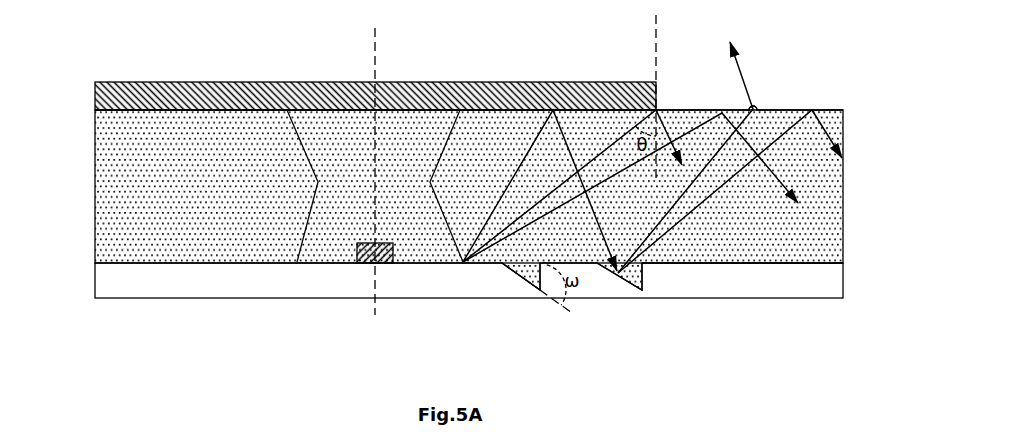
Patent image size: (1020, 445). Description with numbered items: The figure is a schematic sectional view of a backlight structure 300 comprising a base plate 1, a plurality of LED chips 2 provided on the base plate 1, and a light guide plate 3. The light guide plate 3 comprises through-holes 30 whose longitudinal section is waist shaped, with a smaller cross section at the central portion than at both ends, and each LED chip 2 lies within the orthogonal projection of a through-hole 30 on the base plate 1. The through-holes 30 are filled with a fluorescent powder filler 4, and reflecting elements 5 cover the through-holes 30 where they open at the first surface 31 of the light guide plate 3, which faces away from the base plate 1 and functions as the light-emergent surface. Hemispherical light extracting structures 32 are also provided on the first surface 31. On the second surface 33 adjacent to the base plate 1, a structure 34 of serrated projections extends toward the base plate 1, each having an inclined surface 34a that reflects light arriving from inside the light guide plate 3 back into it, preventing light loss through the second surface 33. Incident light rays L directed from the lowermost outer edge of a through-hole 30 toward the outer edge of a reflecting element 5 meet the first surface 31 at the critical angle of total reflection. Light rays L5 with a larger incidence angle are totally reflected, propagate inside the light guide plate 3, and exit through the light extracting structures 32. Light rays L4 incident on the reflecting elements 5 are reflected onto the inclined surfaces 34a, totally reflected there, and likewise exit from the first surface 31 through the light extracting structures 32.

The backlight structure 300 is at (467, 187).
The base plate 1 is at (843, 278).
The LED chips 2 is at (381, 265).
The light guide plate 3 is at (491, 187).
The fluorescent powder filler 4 is at (328, 137).
The reflecting elements 5 is at (395, 81).
The through-holes 30 is at (298, 232).
The first surface 31 is at (827, 109).
The light extracting structures 32 is at (756, 107).
The second surface 33 is at (775, 263).
The structure 34 is at (645, 280).
The inclined surface 34a is at (530, 282).
The incident light rays L is at (603, 152).
The light rays L4 is at (523, 160).
The light rays L5 is at (693, 129).